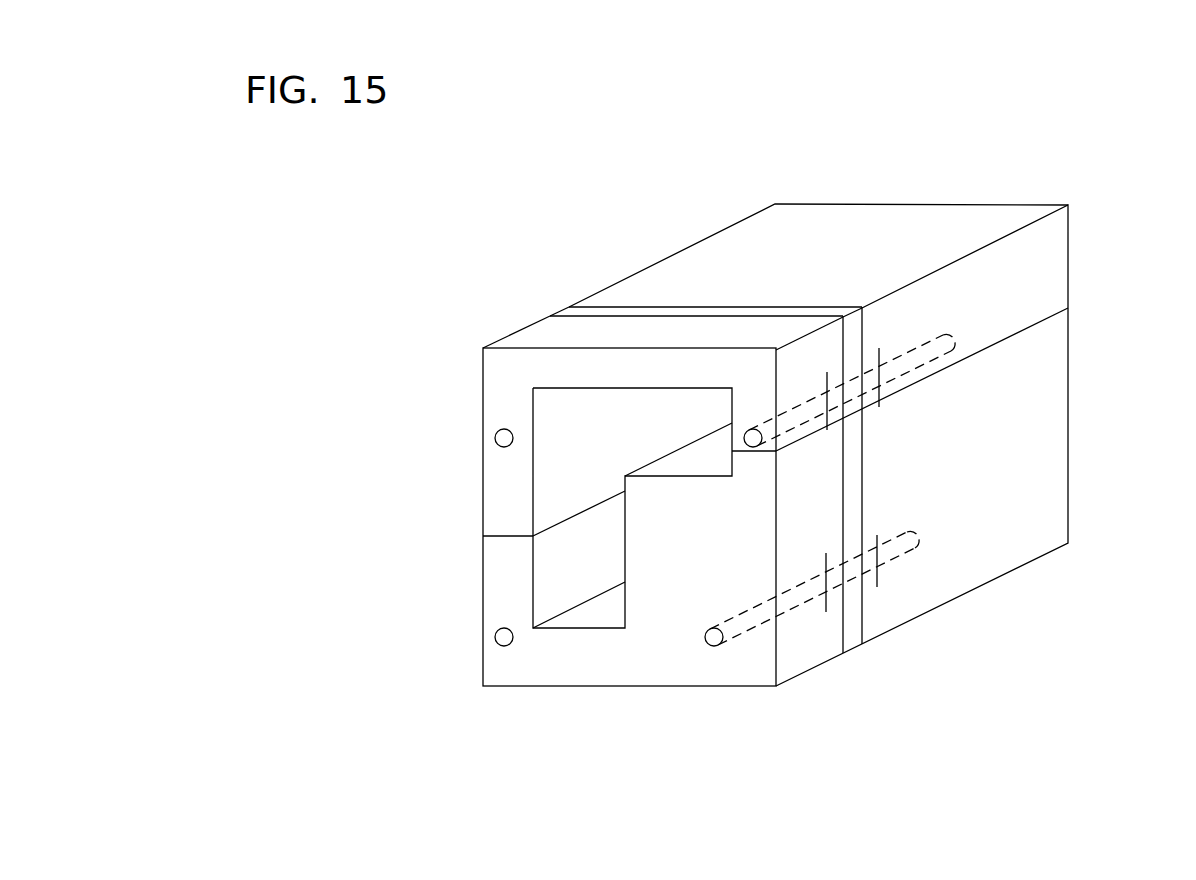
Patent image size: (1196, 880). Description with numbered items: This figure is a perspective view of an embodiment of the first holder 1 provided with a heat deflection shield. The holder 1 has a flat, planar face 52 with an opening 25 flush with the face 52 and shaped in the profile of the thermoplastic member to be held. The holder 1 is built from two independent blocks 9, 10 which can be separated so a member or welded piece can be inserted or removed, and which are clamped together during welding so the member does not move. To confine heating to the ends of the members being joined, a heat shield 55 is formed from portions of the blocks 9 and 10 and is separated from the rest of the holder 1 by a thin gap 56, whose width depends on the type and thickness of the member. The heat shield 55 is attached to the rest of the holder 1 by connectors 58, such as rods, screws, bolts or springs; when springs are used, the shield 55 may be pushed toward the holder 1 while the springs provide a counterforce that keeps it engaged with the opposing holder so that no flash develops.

The first holder 1 is at (988, 118).
The block 9 is at (1028, 205).
The block 10 is at (1068, 469).
The opening 25 is at (550, 572).
The flat, planar face 52 is at (567, 673).
The heat shield 55 is at (483, 457).
The thin gap 56 is at (852, 637).
The connectors 58 is at (855, 490).